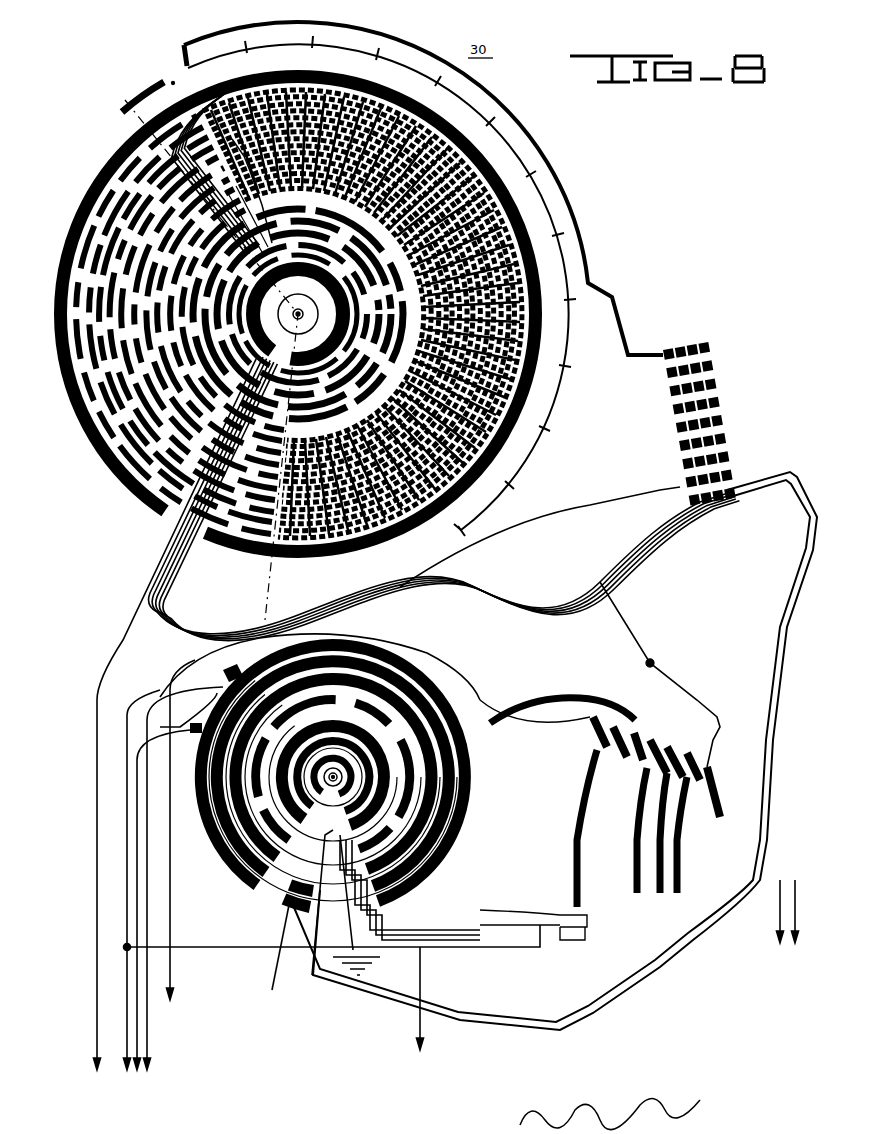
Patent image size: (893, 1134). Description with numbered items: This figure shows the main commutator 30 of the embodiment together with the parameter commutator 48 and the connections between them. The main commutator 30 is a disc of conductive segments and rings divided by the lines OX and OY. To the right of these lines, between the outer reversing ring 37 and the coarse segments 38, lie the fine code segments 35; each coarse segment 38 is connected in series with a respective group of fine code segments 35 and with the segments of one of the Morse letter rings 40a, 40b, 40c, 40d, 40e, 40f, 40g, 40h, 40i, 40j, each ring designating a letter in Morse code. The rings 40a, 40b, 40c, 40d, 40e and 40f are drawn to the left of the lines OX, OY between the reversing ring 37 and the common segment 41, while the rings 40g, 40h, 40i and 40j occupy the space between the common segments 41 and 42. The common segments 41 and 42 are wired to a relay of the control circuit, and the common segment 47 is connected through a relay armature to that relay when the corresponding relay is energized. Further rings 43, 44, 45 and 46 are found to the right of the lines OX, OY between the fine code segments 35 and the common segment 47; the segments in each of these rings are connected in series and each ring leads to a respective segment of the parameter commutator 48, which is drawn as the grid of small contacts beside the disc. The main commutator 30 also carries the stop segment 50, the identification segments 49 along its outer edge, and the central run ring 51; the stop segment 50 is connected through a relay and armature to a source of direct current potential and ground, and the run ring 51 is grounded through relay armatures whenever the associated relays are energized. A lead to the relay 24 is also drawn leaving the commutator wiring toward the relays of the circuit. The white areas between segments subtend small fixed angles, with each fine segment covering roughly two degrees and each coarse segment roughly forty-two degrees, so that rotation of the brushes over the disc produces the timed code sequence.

The main commutator 30 is at (435, 576).
The fine code segments 35 is at (520, 365).
The reversing ring 37 is at (97, 182).
The coarse segment 38 is at (247, 212).
The ring 40a is at (173, 325).
The ring 40b is at (180, 324).
The ring 40c is at (186, 324).
The ring 40d is at (192, 323).
The ring 40e is at (199, 323).
The ring 40f is at (206, 322).
The ring 40g is at (212, 322).
The ring 40h is at (219, 321).
The ring 40i is at (226, 320).
The ring 40j is at (233, 320).
The common segment 41 is at (213, 207).
The common segment 42 is at (298, 305).
The ring 43 is at (298, 314).
The ring 44 is at (298, 314).
The ring 45 is at (304, 314).
The ring 46 is at (298, 314).
The common segment 47 is at (299, 314).
The parameter commutator 48 is at (715, 309).
The identification segments 49 is at (312, 50).
The stop segment 50 is at (140, 98).
The run ring 51 is at (316, 288).
The relay Ry24 disc 24 is at (140, 618).